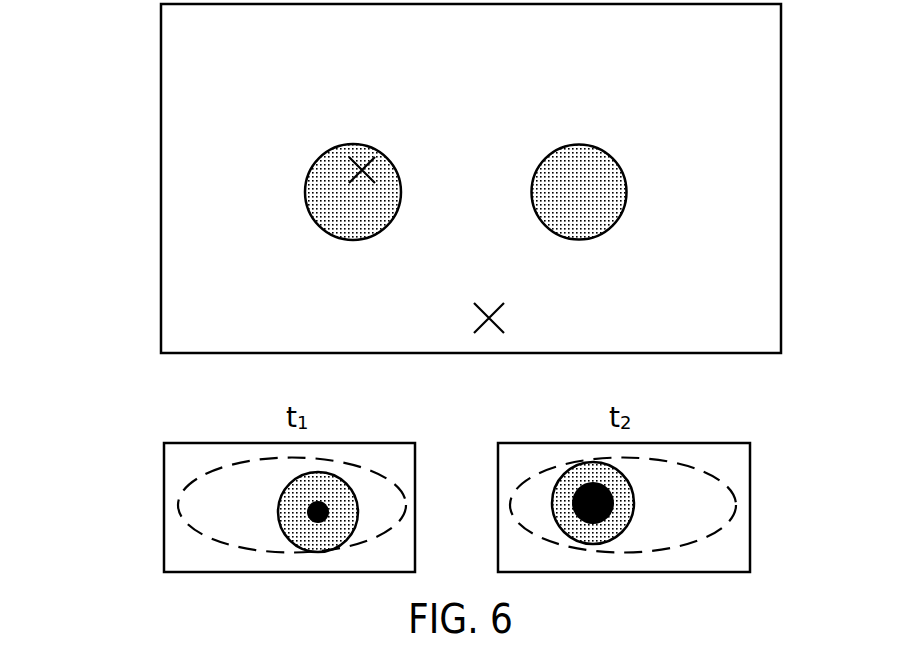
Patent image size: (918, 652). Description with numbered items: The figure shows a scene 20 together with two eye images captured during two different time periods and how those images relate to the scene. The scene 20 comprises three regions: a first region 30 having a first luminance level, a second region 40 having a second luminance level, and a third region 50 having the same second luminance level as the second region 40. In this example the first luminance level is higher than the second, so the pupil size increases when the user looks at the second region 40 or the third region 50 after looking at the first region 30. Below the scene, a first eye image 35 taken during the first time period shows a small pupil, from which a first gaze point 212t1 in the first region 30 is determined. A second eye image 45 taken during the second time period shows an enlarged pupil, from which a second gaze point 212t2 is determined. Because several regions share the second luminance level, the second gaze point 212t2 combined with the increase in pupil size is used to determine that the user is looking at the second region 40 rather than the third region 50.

The scene 20 is at (132, 74).
The first region 30 is at (496, 110).
The second region 40 is at (347, 213).
The third region 50 is at (579, 190).
The first eye image 35 is at (164, 548).
The second eye image 45 is at (750, 530).
The first gaze point 212t1 is at (487, 323).
The second gaze point 212t2 is at (364, 172).